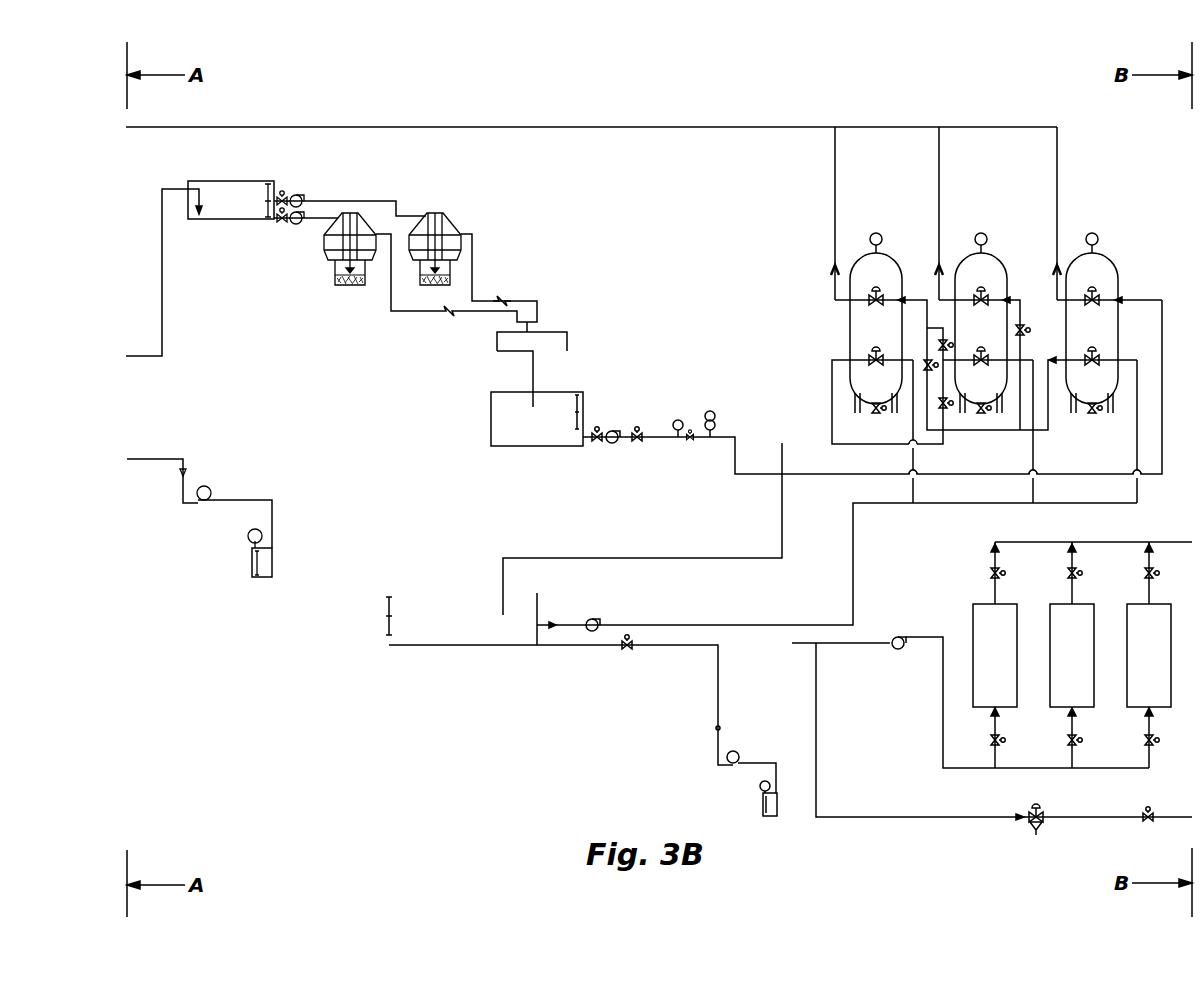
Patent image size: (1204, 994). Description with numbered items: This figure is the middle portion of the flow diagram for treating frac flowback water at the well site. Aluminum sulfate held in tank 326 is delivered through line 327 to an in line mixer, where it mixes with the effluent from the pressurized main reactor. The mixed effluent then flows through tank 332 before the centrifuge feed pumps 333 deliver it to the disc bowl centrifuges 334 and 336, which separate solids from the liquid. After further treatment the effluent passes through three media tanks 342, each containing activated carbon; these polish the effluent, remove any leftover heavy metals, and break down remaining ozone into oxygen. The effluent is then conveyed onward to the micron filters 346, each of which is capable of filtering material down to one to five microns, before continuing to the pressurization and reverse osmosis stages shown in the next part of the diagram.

The tank 326 is at (273, 548).
The line 327 is at (152, 459).
The tank 332 is at (208, 180).
The centrifuge feed pumps 333 is at (295, 195).
The disc bowl centrifuge 334 is at (359, 214).
The disc bowl centrifuge 336 is at (447, 214).
The media tanks 342 is at (900, 263).
The micron filters 346 is at (973, 602).